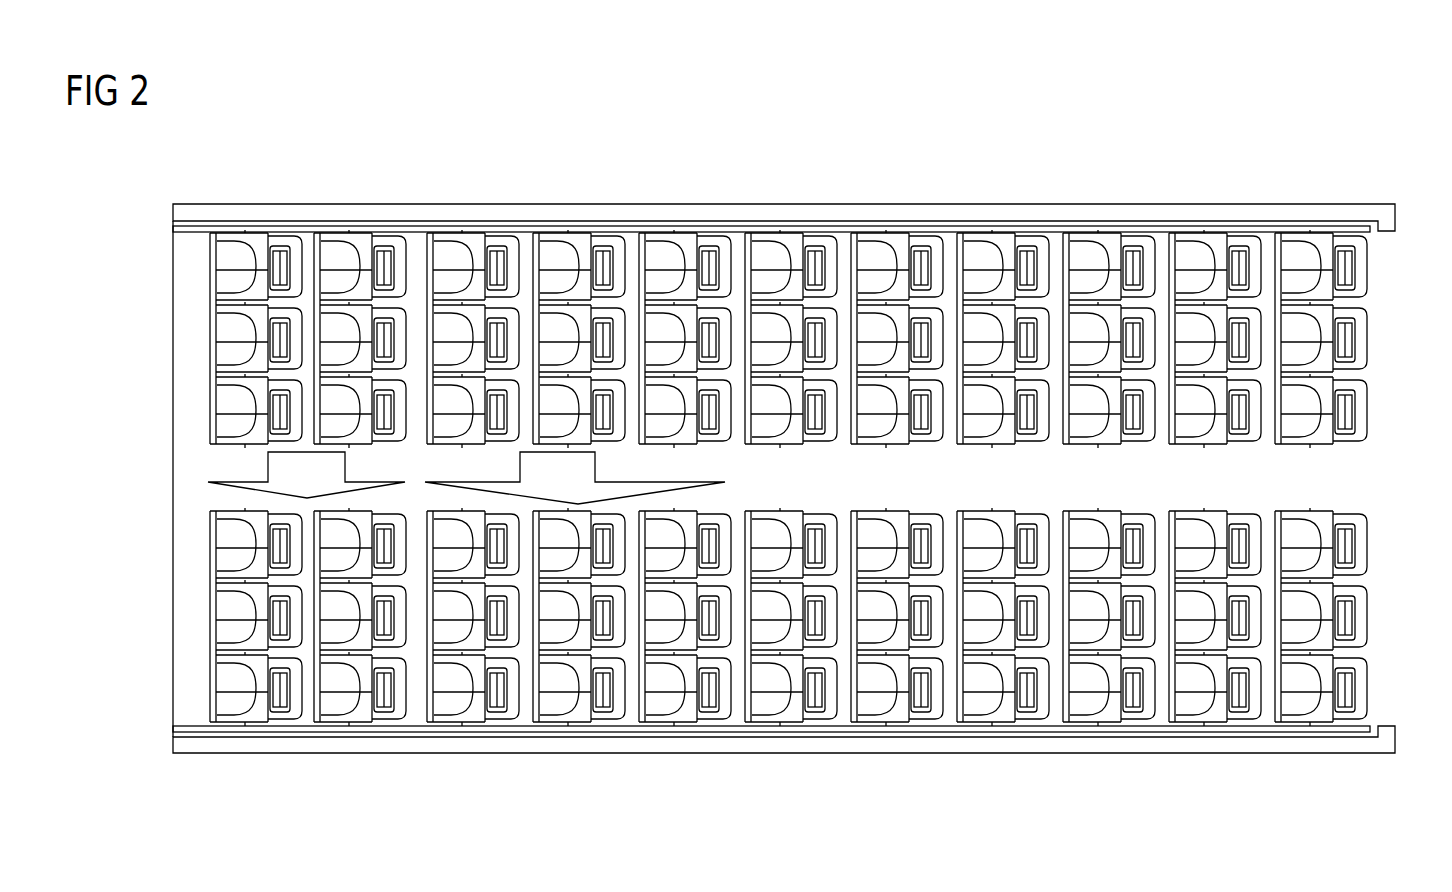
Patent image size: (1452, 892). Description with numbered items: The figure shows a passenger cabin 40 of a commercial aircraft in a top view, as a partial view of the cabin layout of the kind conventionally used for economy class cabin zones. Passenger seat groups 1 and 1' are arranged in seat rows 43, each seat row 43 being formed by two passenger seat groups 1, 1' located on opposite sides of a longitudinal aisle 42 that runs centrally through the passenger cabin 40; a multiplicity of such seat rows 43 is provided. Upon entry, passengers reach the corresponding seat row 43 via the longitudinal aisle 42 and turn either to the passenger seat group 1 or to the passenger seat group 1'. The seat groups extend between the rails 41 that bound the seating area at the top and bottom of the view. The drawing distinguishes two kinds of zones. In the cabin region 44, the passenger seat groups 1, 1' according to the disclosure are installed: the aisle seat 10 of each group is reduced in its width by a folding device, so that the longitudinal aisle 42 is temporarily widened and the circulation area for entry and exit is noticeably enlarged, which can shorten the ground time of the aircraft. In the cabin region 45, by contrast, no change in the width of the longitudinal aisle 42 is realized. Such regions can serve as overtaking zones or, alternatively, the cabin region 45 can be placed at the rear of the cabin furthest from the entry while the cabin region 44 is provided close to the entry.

The passenger cabin 40 is at (132, 190).
The seat rail 41 is at (380, 218).
The longitudinal aisle 42 is at (1340, 477).
The seat row 43 is at (518, 230).
The cabin region 44 is at (625, 455).
The cabin region 45 is at (333, 462).
The passenger seat group 1 is at (1016, 349).
The passenger seat group 1' is at (1109, 656).
The aisle seat 10 is at (1097, 425).